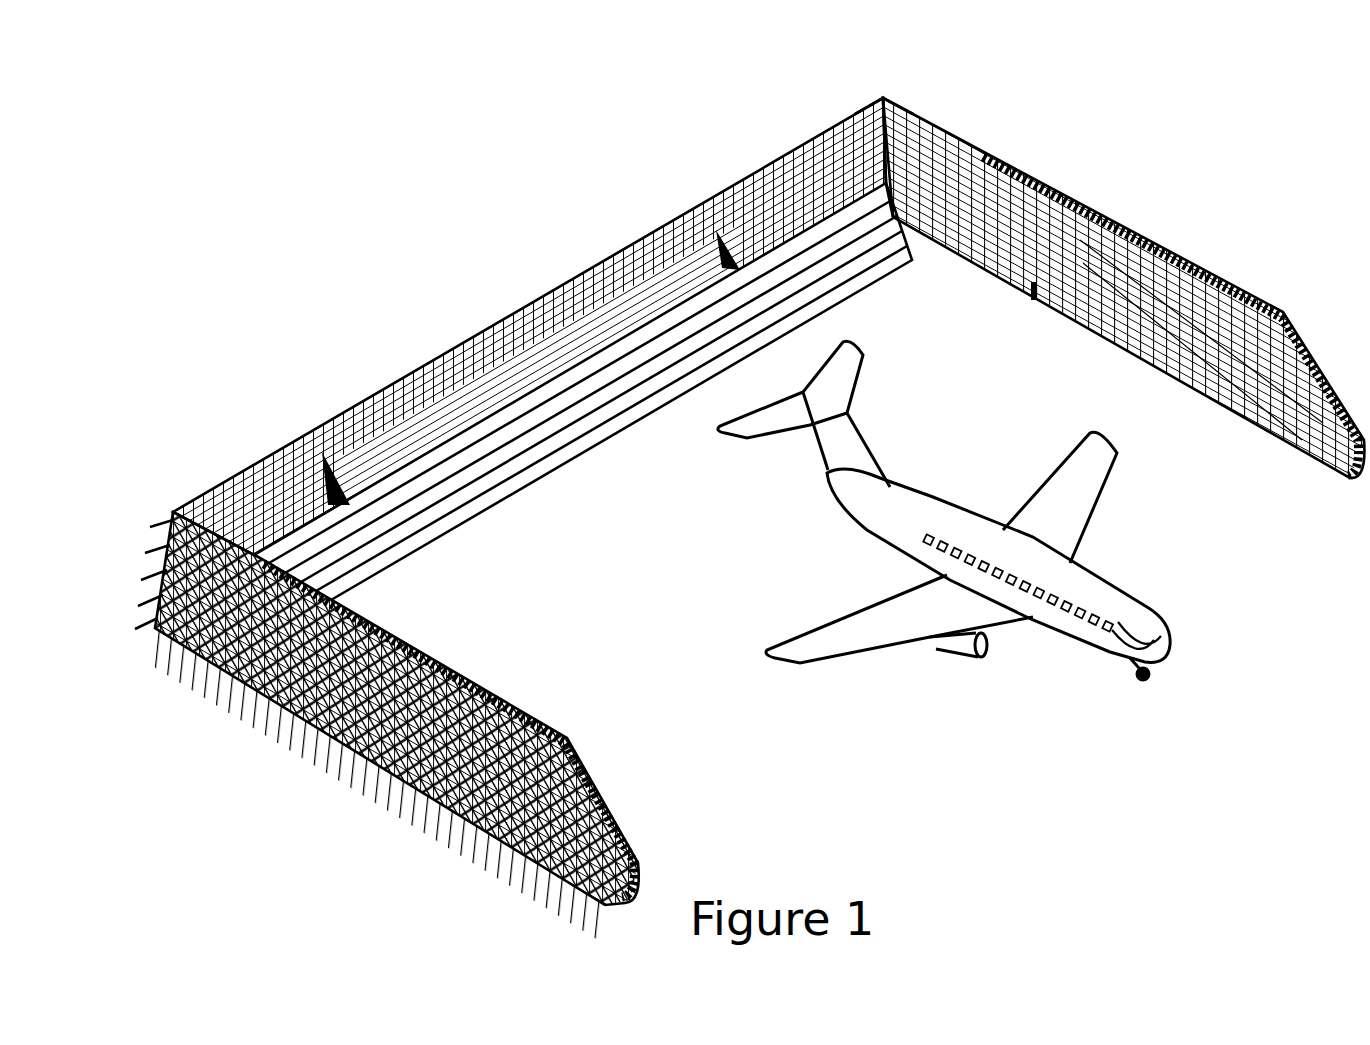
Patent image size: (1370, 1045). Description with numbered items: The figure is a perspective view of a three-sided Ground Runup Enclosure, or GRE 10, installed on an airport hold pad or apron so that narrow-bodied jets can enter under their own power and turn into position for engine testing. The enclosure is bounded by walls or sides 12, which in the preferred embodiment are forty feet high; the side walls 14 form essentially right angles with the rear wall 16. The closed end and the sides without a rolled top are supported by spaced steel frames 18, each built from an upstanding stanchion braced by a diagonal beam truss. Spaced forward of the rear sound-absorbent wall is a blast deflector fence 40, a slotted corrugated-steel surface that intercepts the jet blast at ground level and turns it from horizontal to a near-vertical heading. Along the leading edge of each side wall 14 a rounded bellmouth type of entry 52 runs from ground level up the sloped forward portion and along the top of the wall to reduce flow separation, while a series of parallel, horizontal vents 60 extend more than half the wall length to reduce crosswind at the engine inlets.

The Ground Runup Enclosure (GRE) 10 is at (749, 493).
The wall or sides 12 is at (918, 108).
The side walls 14 is at (1123, 277).
The rear wall 16 is at (246, 468).
The spaced steel frames 18 is at (250, 700).
The blast deflector fence 40 is at (570, 482).
The rounded bellmouth entry 52 is at (1153, 232).
The horizontal vents 60 is at (1035, 300).